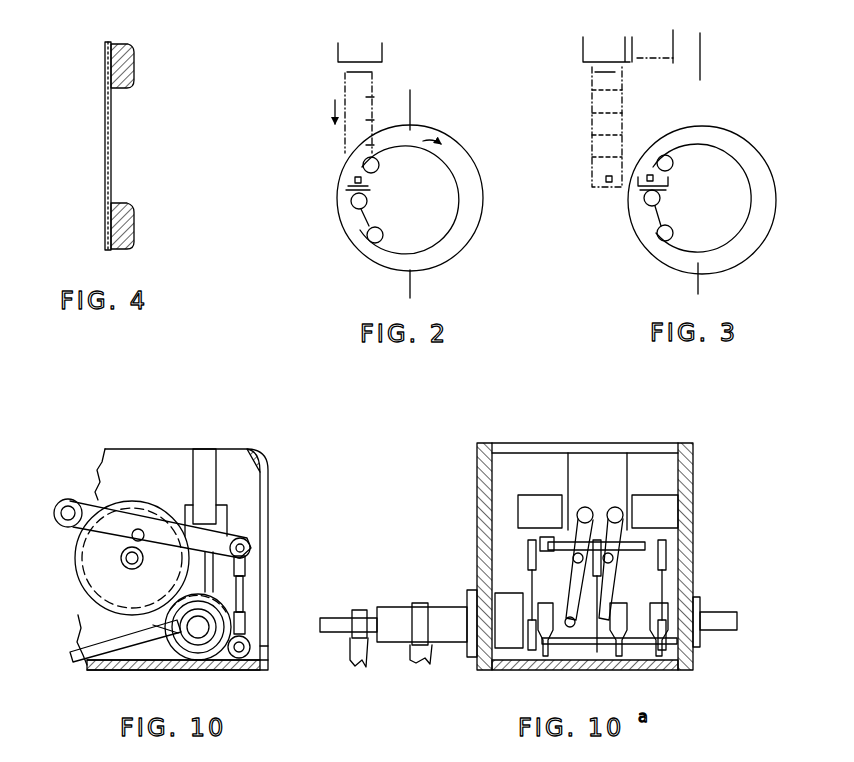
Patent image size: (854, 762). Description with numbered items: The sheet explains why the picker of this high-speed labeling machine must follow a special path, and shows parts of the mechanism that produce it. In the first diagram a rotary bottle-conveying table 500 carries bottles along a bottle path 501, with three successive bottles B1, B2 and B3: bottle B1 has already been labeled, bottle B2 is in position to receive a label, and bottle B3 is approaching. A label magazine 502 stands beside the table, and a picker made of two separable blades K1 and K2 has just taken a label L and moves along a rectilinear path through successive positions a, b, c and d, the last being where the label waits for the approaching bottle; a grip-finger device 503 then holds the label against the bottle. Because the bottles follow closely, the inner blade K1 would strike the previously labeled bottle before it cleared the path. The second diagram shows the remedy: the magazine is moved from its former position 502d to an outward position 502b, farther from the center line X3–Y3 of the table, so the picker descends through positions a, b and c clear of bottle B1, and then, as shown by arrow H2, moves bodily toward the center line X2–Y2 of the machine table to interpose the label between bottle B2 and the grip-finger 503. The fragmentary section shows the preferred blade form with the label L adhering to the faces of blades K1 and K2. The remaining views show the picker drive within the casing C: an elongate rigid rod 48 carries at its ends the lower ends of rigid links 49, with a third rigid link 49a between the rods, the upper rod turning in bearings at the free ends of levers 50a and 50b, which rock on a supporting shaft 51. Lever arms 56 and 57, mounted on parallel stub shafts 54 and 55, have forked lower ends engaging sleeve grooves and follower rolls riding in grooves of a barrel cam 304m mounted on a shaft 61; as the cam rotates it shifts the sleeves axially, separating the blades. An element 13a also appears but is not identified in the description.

In FIG. 4, the label L is at (106, 108).
In FIG. 2, the label L is at (352, 80).
In FIG. 4, the inner picker blade K1 is at (130, 62).
In FIG. 2, the inner picker blade K1 is at (376, 72).
In FIG. 3, the inner picker blade K1 is at (620, 68).
In FIG. 10A, the inner picker blade K1 is at (418, 663).
In FIG. 4, the picker blade K2 is at (134, 217).
In FIG. 2, the picker blade K2 is at (346, 74).
In FIG. 3, the picker blade K2 is at (592, 70).
In FIG. 10, the picker blade K2 is at (128, 644).
In FIG. 10A, the picker blade K2 is at (352, 665).
In FIG. 2, the rotary bottle-conveying table 500 is at (475, 190).
In FIG. 3, the rotary bottle-conveying table 500 is at (743, 148).
In FIG. 2, the bottle path 501 is at (462, 214).
In FIG. 3, the bottle path 501 is at (740, 238).
In FIG. 2, the label magazine 502 is at (380, 54).
In FIG. 3, the magazine position 502b is at (610, 42).
In FIG. 3, the former magazine position 502d is at (676, 42).
In FIG. 2, the grip-finger device 503 is at (372, 185).
In FIG. 3, the grip-finger device 503 is at (650, 172).
In FIG. 2, the picker position a is at (350, 98).
In FIG. 3, the picker position a is at (592, 88).
In FIG. 2, the picker position b is at (348, 127).
In FIG. 3, the picker position b is at (592, 113).
In FIG. 2, the picker position c is at (348, 146).
In FIG. 3, the picker position c is at (592, 136).
In FIG. 2, the picker position d is at (338, 188).
In FIG. 3, the arrow H2 is at (630, 184).
In FIG. 2, the bottle B1 is at (380, 165).
In FIG. 3, the bottle B1 is at (673, 163).
In FIG. 2, the bottle B2 is at (368, 201).
In FIG. 3, the bottle B2 is at (660, 198).
In FIG. 2, the bottle B3 is at (383, 235).
In FIG. 3, the bottle B3 is at (673, 233).
In FIG. 2, the center line X3 is at (411, 102).
In FIG. 2, the center line Y3 is at (411, 282).
In FIG. 3, the center line X2 is at (701, 52).
In FIG. 3, the center line Y2 is at (699, 280).
In FIG. 10, the casing C is at (266, 460).
In FIG. 10A, the casing C is at (650, 516).
In FIG. 10, the shaft 61 is at (127, 562).
In FIG. 10, the supporting shaft 51 is at (60, 520).
In FIG. 10, the lever 50a is at (96, 500).
In FIG. 10A, the lever 50a is at (540, 535).
In FIG. 10A, the lever 50b is at (680, 500).
In FIG. 10, the rigid link 49 is at (244, 590).
In FIG. 10A, the rigid link 49 is at (530, 590).
In FIG. 10A, the third rigid link 49a is at (602, 648).
In FIG. 10A, the elongate rigid rod 48 is at (580, 646).
In FIG. 10, the cam 13a is at (195, 630).
In FIG. 10, the barrel cam 304m is at (90, 596).
In FIG. 10A, the stub shaft 54 is at (592, 508).
In FIG. 10A, the stub shaft 55 is at (620, 507).
In FIG. 10A, the lever arm 56 is at (565, 588).
In FIG. 10A, the lever arm 57 is at (600, 580).